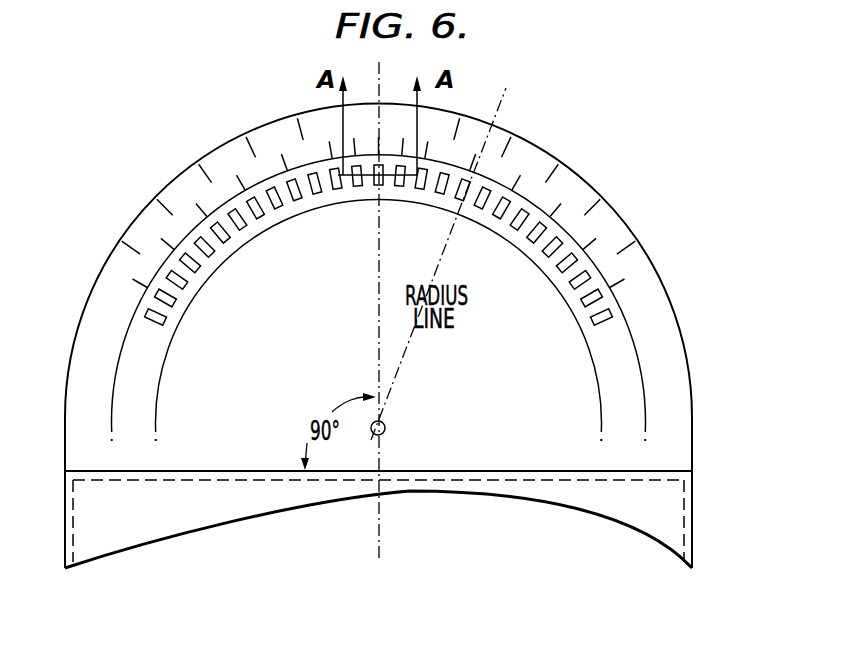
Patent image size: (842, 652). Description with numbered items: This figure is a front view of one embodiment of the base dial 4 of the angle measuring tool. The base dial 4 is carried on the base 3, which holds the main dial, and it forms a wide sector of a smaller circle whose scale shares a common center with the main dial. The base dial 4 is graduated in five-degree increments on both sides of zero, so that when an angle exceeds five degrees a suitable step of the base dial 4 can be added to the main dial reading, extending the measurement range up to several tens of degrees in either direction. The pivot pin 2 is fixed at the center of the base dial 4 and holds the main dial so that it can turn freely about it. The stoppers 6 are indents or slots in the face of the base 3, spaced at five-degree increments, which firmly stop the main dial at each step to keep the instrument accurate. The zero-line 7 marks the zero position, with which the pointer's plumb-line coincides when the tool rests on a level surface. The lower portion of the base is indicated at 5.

The pivot pin 2 is at (388, 424).
The base 3 is at (656, 259).
The base dial 4 is at (407, 315).
The base 5 is at (63, 510).
The stoppers 6 is at (155, 328).
The zero-line 7 is at (321, 312).